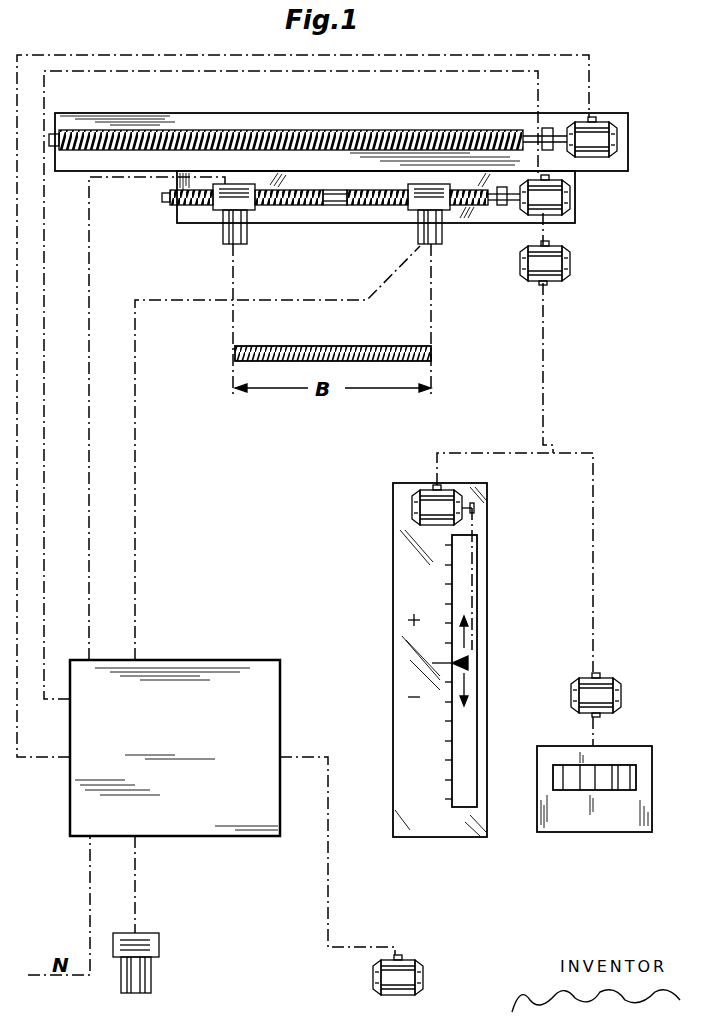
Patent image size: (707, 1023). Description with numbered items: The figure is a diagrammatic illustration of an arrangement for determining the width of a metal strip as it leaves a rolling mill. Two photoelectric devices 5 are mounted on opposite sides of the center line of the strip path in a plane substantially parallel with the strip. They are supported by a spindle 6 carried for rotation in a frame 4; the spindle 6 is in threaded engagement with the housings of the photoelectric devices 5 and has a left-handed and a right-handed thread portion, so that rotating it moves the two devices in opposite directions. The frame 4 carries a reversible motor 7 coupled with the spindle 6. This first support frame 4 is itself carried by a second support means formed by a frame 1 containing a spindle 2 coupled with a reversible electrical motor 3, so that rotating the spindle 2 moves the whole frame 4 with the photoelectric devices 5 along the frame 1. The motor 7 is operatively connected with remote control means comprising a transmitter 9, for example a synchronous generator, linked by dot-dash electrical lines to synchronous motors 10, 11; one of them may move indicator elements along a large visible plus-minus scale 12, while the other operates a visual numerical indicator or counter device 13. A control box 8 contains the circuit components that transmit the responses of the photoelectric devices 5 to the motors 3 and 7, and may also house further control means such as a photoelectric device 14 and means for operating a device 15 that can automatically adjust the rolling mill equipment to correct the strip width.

The frame 1 is at (170, 124).
The spindle 2 is at (333, 130).
The reversible electrical motor 3 is at (597, 130).
The frame 4 is at (183, 215).
The photoelectric devices 5 is at (231, 232).
The spindle 6 is at (470, 208).
The reversible motor 7 is at (560, 191).
The control box 8 is at (248, 680).
The transmitter 9 is at (560, 259).
The synchronous motor 10 is at (428, 500).
The synchronous motor 11 is at (605, 690).
The plus-minus scale 12 is at (403, 580).
The counter device 13 is at (565, 820).
The photoelectric device 14 is at (150, 945).
The device 15 is at (410, 970).